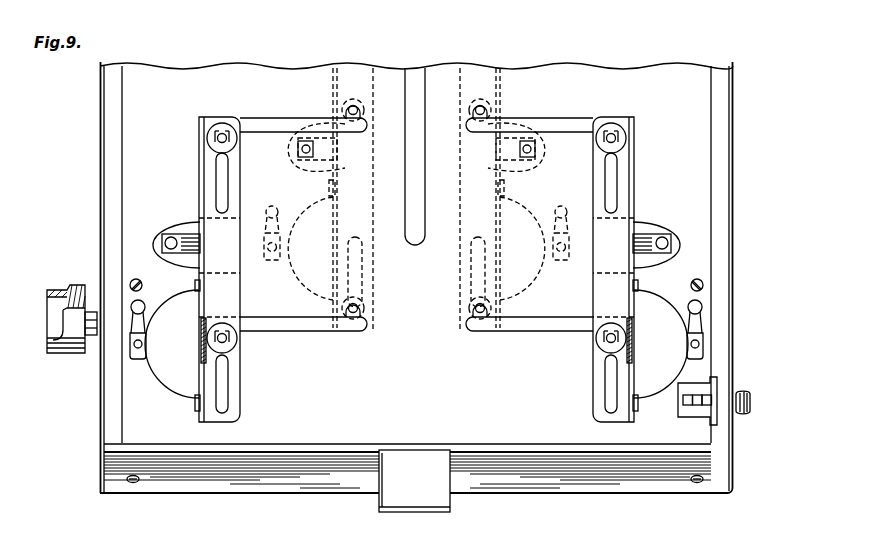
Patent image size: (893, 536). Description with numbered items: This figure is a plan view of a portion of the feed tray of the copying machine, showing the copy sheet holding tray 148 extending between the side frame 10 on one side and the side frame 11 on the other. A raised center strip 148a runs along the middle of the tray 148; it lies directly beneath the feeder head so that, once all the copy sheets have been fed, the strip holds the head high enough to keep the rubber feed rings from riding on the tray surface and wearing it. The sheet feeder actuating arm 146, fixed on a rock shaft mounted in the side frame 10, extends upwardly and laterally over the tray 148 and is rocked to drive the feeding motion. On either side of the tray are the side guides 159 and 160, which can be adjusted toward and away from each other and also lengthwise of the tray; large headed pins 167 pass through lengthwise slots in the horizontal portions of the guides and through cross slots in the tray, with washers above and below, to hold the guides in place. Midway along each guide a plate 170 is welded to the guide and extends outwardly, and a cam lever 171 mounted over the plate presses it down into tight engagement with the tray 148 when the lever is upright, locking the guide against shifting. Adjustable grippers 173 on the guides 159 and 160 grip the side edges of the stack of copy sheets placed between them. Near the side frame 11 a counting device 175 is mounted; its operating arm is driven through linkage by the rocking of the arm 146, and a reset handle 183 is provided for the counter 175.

The side frame 10 is at (100, 393).
The side frame 11 is at (733, 358).
The sheet feeder actuating arm 146 is at (80, 354).
The copy sheet holding tray 148 is at (425, 403).
The center strip 148a is at (414, 246).
The side guide 159 is at (637, 172).
The side guide 160 is at (199, 170).
The large headed pin 167 is at (222, 134).
The plate 170 is at (182, 222).
The cam lever 171 is at (162, 243).
The adjustable gripper 173 is at (206, 358).
The counting device 175 is at (710, 417).
The reset handle 183 is at (752, 406).